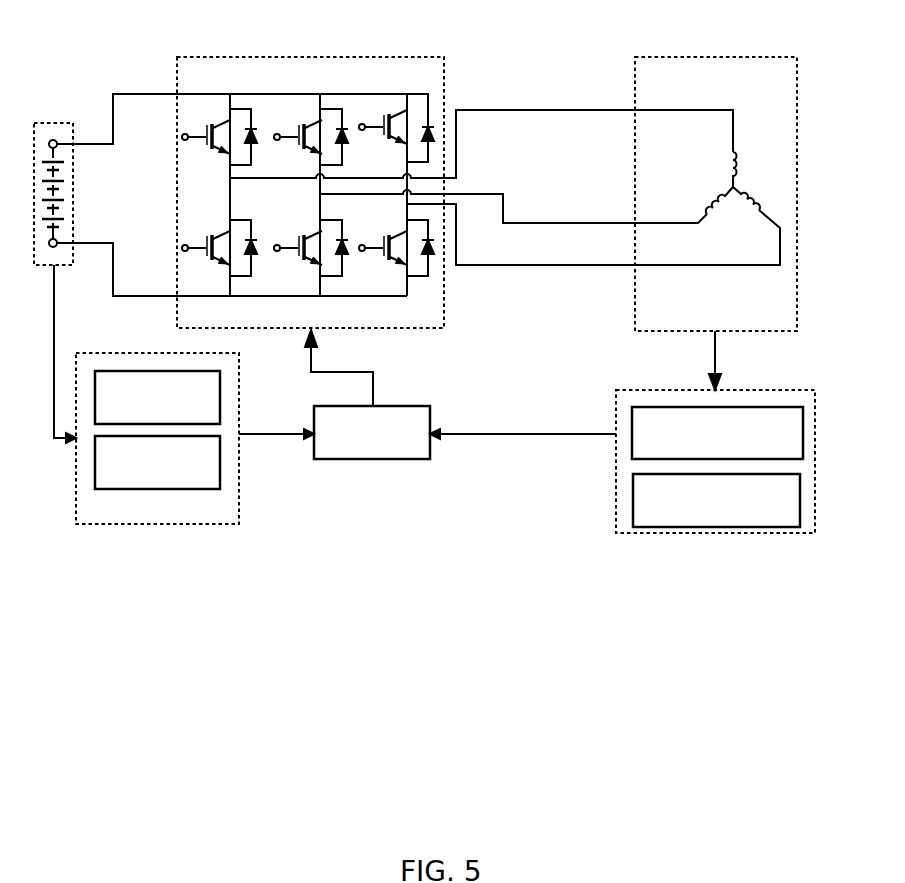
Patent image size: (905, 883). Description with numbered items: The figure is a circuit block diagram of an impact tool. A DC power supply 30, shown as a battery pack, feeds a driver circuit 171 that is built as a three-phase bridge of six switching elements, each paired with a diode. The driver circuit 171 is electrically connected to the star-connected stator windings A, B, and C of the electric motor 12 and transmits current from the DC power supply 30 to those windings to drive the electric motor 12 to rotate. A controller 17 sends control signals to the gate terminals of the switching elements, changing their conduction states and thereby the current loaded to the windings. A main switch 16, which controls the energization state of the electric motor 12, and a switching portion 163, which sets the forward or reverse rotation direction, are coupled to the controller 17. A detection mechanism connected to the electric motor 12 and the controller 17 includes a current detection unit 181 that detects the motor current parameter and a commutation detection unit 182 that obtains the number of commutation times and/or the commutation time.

The DC power supply 30 is at (36, 123).
The driver circuit 171 is at (312, 57).
The electric motor 12 is at (713, 57).
The main switch 16 is at (220, 395).
The switching portion 163 is at (220, 478).
The controller 17 is at (378, 460).
The current detection unit 181 is at (742, 407).
The commutation detection unit 182 is at (800, 487).